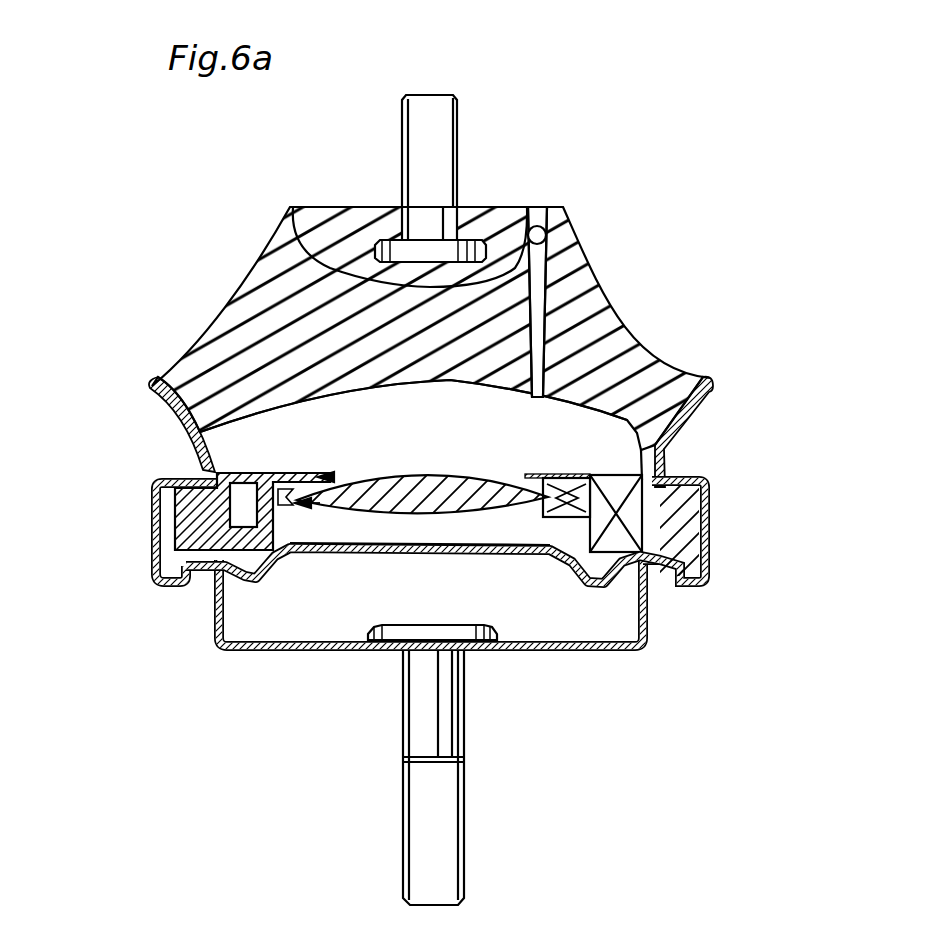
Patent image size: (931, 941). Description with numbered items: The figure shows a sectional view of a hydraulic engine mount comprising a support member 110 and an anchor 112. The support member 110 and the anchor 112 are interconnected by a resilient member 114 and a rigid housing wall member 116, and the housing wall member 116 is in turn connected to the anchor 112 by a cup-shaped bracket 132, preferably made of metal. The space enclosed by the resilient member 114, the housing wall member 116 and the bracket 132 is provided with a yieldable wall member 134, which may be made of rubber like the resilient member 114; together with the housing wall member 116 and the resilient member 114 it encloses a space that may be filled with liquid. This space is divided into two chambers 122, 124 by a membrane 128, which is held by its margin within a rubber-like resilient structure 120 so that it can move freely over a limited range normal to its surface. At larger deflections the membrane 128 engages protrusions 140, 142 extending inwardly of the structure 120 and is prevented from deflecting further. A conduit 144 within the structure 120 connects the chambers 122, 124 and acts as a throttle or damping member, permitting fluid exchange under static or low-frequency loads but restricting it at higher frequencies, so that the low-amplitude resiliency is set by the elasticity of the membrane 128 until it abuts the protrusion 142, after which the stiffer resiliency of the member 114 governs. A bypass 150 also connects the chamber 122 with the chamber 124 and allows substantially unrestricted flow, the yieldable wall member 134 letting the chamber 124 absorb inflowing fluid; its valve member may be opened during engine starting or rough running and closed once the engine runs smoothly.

The support member 110 is at (475, 222).
The anchor 112 is at (452, 725).
The resilient member 114 is at (243, 330).
The rigid housing wall member 116 is at (153, 560).
The resilient structure 120 is at (190, 504).
The chamber 122 is at (250, 445).
The chamber 124 is at (290, 548).
The membrane 128 is at (390, 518).
The cup-shaped bracket 132 is at (323, 647).
The yieldable wall member 134 is at (317, 532).
The protrusion 140 is at (333, 477).
The protrusion 142 is at (215, 590).
The conduit 144 is at (157, 522).
The bypass 150 is at (707, 505).